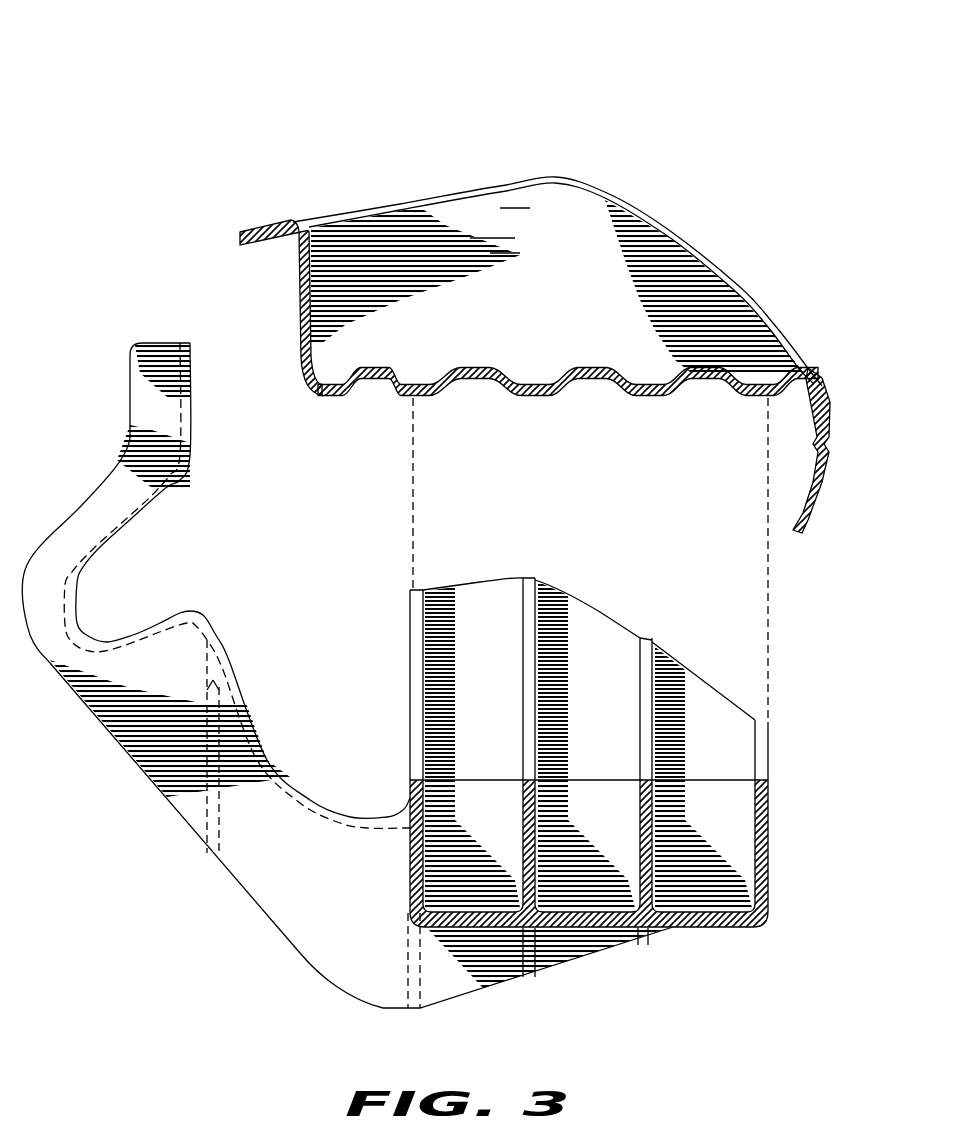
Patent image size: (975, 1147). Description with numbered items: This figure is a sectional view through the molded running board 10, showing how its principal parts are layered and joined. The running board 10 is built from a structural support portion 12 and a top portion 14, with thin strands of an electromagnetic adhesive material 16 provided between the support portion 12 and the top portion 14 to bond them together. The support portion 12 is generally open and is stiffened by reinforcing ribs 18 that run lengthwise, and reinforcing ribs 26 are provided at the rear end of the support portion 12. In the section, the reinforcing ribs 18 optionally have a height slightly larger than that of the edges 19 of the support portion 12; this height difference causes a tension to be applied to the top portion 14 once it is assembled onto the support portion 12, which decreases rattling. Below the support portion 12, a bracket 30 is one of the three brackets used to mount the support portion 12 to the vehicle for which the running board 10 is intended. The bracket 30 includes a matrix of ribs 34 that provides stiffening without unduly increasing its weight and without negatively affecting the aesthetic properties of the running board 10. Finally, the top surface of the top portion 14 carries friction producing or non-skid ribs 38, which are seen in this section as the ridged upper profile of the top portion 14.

The molded running board 10 is at (140, 178).
The structural support portion 12 is at (770, 854).
The top portion 14 is at (823, 390).
The electromagnetic adhesive material 16 is at (757, 489).
The reinforcing ribs 18 is at (640, 838).
The edges of the support portion 19 is at (423, 810).
The reinforcing ribs 26 is at (640, 683).
The bracket 30 is at (153, 728).
The matrix of ribs 34 is at (213, 802).
The non-skid ribs 38 is at (590, 367).